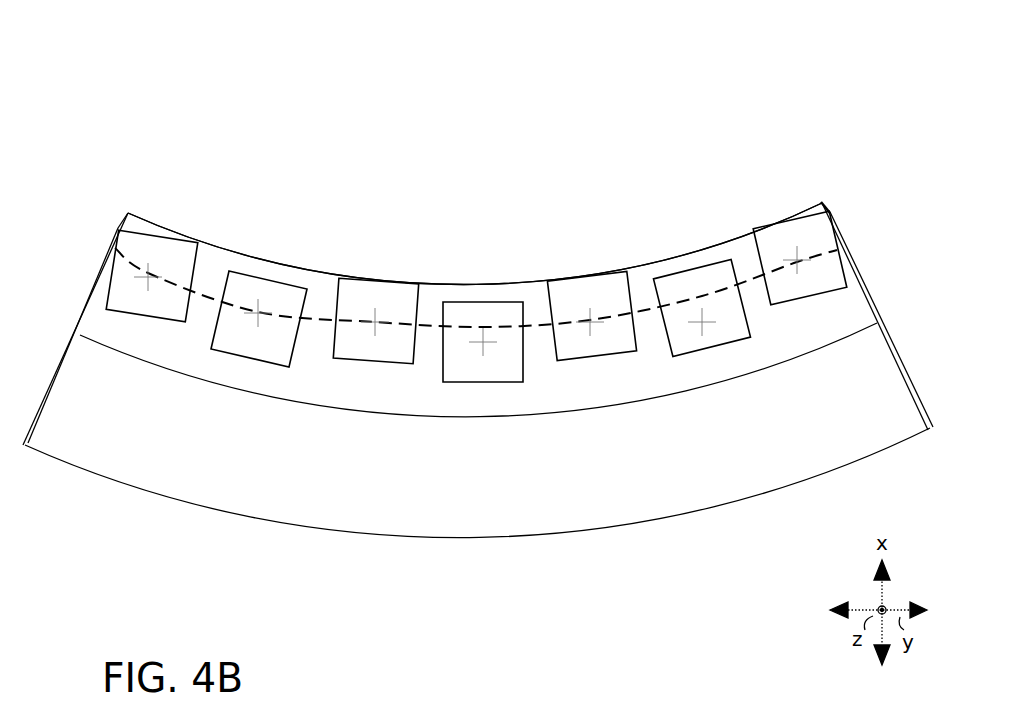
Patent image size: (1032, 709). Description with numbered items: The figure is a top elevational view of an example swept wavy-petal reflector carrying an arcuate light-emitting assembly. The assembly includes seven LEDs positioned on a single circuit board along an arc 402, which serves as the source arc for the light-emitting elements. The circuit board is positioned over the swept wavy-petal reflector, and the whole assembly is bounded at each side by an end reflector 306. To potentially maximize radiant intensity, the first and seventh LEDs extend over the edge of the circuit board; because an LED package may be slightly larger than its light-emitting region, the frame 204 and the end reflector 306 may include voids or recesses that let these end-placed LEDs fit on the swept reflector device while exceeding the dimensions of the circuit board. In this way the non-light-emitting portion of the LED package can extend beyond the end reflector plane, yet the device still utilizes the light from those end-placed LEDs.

The frame 204 is at (128, 211).
The arc 402 is at (836, 252).
The end reflector 306 is at (865, 298).